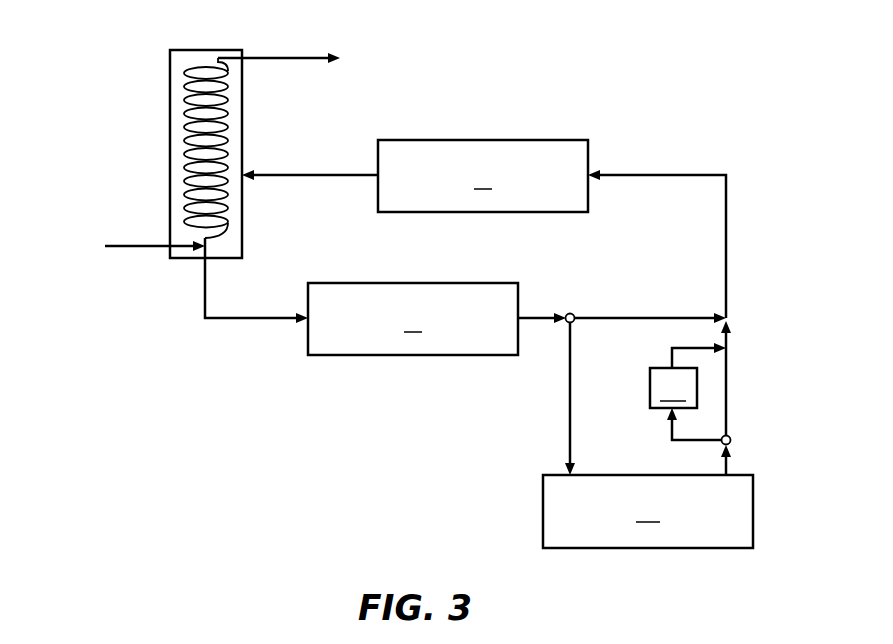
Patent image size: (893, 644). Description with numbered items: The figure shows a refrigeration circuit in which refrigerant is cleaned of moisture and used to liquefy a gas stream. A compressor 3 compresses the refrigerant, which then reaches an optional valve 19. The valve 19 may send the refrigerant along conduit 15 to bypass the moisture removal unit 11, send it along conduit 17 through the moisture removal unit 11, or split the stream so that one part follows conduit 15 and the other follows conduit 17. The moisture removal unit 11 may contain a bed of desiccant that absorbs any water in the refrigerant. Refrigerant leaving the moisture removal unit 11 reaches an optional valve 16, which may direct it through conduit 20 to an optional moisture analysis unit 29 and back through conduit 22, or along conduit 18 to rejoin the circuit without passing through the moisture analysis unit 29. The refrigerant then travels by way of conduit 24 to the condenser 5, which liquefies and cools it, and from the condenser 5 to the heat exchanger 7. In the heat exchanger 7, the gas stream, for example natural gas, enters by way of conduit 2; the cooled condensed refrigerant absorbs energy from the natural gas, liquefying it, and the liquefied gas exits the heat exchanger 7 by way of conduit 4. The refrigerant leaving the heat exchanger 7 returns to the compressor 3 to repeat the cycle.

The conduit 2 is at (136, 242).
The compressor 3 is at (385, 296).
The conduit 4 is at (276, 55).
The condenser 5 is at (415, 176).
The heat exchanger 7 is at (244, 123).
The moisture removal unit 11 is at (648, 496).
The conduit 15 is at (644, 314).
The valve 16 is at (731, 441).
The conduit 17 is at (566, 396).
The conduit 18 is at (730, 382).
The valve 19 is at (570, 313).
The conduit 20 is at (668, 440).
The conduit 22 is at (668, 350).
The conduit 24 is at (730, 253).
The moisture analysis unit 29 is at (673, 388).